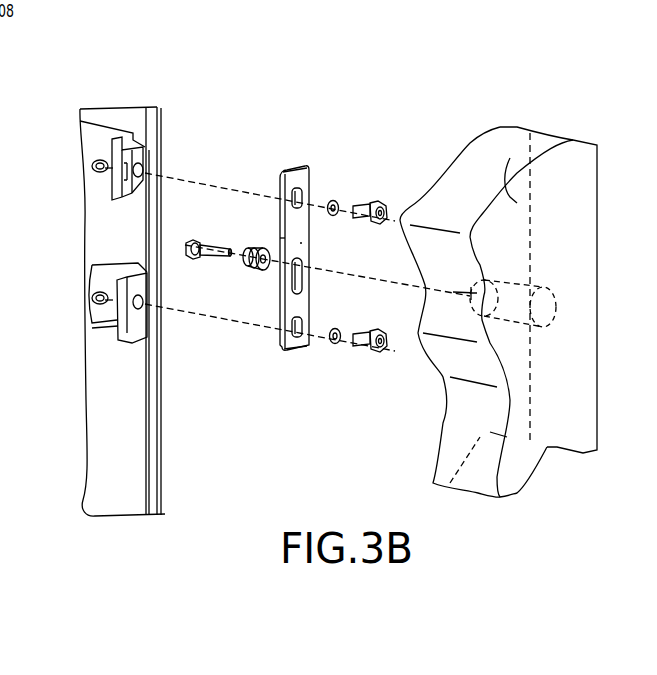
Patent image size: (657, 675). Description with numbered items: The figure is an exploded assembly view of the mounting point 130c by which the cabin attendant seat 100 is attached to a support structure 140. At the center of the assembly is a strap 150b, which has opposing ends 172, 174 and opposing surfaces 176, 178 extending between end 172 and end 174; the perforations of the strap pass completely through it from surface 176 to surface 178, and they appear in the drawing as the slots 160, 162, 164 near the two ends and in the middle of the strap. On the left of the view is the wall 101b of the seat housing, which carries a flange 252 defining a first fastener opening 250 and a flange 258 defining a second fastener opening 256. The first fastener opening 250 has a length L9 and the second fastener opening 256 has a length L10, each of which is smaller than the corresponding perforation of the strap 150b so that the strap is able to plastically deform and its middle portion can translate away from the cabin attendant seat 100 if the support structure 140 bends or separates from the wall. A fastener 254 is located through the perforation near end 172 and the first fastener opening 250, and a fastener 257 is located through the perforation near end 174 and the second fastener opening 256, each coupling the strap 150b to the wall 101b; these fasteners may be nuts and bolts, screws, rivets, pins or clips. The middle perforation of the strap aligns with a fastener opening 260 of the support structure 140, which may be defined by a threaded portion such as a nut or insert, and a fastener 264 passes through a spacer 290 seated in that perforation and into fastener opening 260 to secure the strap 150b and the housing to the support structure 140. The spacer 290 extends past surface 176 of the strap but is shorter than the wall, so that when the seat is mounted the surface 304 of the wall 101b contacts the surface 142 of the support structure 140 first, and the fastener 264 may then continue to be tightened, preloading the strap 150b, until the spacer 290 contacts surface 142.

The cabin attendant seat 100 is at (115, 108).
The wall 101b is at (123, 240).
The mounting point 130c is at (373, 105).
The support structure 140 is at (587, 163).
The surface of support structure 142 is at (470, 153).
The strap 150b is at (307, 172).
The upper slot 160 is at (303, 193).
The lower slot 162 is at (305, 322).
The middle slot 164 is at (305, 282).
The end of strap 172 is at (287, 172).
The end of strap 174 is at (298, 353).
The surface of strap 176 is at (296, 244).
The surface of strap 178 is at (280, 238).
The first fastener opening 250 is at (141, 176).
The flange 252 is at (138, 157).
The fastener 254 is at (360, 203).
The second fastener opening 256 is at (145, 307).
The fastener 257 is at (364, 345).
The flange 258 is at (132, 323).
The fastener opening 260 is at (550, 317).
The fastener 264 is at (206, 258).
The spacer 290 is at (256, 271).
The surface of wall 304 is at (157, 427).
The length of first fastener opening L9 is at (132, 172).
The length of second fastener opening L10 is at (130, 302).